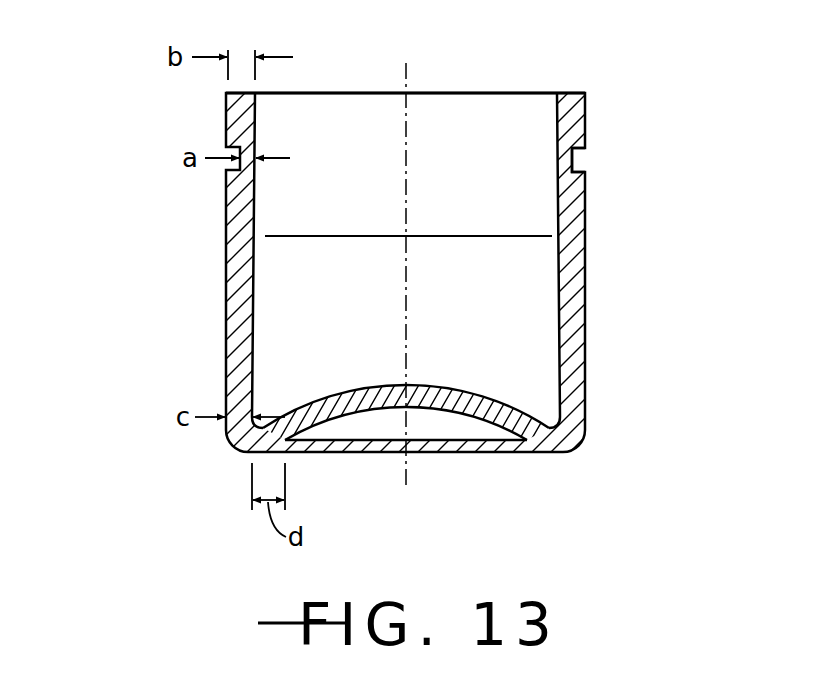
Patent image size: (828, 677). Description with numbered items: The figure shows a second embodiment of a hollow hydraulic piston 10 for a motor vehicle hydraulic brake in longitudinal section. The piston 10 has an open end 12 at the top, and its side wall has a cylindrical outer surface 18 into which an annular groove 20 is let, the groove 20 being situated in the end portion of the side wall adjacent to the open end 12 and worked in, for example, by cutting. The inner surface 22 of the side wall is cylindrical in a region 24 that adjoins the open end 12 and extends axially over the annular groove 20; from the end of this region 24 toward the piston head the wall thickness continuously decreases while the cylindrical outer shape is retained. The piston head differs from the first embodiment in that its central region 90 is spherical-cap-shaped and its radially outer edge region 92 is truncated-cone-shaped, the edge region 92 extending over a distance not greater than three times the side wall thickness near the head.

The hydraulic piston 10 is at (120, 133).
The open end 12 is at (467, 93).
The cylindrical outer surface 18 is at (585, 278).
The annular groove 20 is at (580, 161).
The inner surface 22 is at (251, 382).
The cylindrical region of the inner surface 24 is at (255, 218).
The central region of the head 90 is at (447, 412).
The truncated-cone-shaped edge region 92 is at (533, 437).